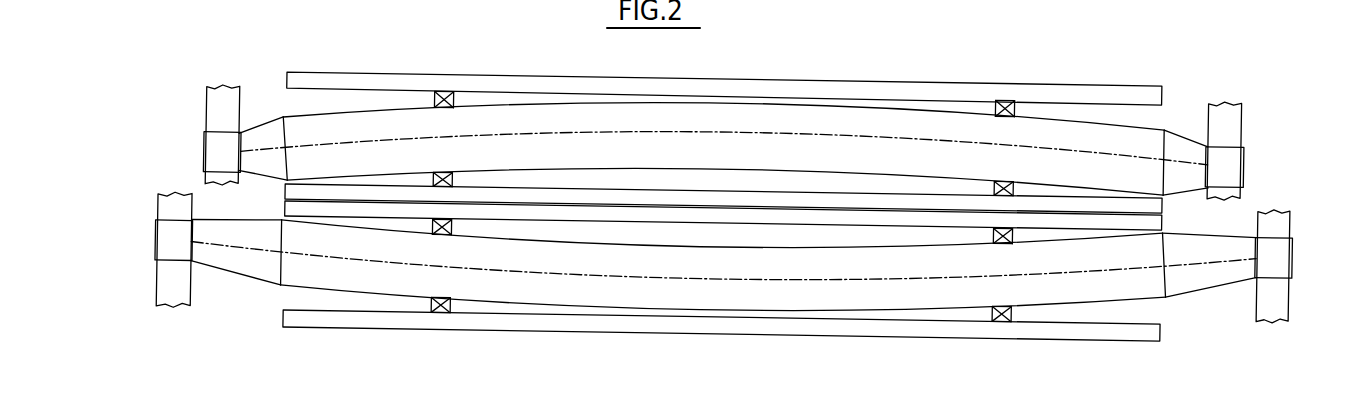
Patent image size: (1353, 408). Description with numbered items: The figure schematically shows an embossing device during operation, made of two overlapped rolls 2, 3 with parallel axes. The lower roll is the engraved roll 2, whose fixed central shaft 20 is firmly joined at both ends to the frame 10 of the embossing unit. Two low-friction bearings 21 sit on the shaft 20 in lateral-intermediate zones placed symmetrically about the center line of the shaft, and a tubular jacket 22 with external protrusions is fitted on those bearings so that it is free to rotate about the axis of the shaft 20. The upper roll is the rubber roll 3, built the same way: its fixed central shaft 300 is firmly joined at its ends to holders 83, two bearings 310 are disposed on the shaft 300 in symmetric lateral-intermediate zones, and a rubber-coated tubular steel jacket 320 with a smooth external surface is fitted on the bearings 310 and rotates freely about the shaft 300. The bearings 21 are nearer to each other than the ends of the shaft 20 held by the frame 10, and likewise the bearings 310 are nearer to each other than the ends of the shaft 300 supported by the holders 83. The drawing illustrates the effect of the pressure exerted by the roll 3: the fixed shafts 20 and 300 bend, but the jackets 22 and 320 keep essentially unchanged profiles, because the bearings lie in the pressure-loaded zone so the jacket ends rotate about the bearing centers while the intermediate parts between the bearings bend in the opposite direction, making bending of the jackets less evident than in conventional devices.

The engraved roll 2 is at (248, 344).
The rubber roll 3 is at (1189, 66).
The frame 10 is at (173, 285).
The fixed central shaft 20 is at (1138, 286).
The bearings 21 is at (422, 307).
The tubular jacket 22 is at (597, 327).
The holders 83 is at (212, 112).
The fixed central shaft 300 is at (267, 128).
The bearings 310 is at (410, 100).
The rubber-coated tubular steel jacket 320 is at (822, 87).